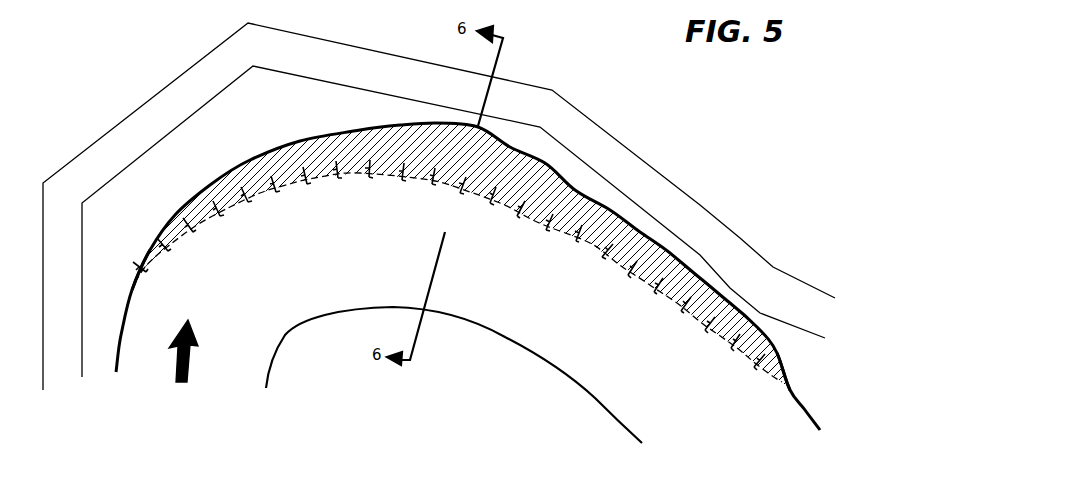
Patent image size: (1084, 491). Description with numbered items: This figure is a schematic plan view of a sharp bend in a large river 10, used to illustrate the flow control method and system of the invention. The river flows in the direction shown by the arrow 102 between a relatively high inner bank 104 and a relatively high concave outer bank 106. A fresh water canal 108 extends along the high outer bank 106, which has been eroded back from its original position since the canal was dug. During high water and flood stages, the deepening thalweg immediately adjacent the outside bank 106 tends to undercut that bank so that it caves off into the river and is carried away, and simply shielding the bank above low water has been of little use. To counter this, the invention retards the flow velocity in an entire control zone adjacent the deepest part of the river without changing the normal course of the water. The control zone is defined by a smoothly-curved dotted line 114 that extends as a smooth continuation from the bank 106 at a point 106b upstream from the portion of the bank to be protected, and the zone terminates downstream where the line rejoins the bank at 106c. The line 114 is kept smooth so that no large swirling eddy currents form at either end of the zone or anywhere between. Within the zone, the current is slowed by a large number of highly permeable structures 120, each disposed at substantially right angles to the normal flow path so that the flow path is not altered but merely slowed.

The river 10 is at (124, 315).
The arrow 102 is at (184, 383).
The inner bank 104 is at (528, 350).
The outer bank 106 is at (387, 127).
The point upstream on bank 106b is at (128, 288).
The right end of liner band 106c is at (788, 388).
The fresh water canal 108 is at (377, 50).
The smoothly-curved dotted line 114 is at (445, 194).
The highly permeable structures 120 is at (228, 212).